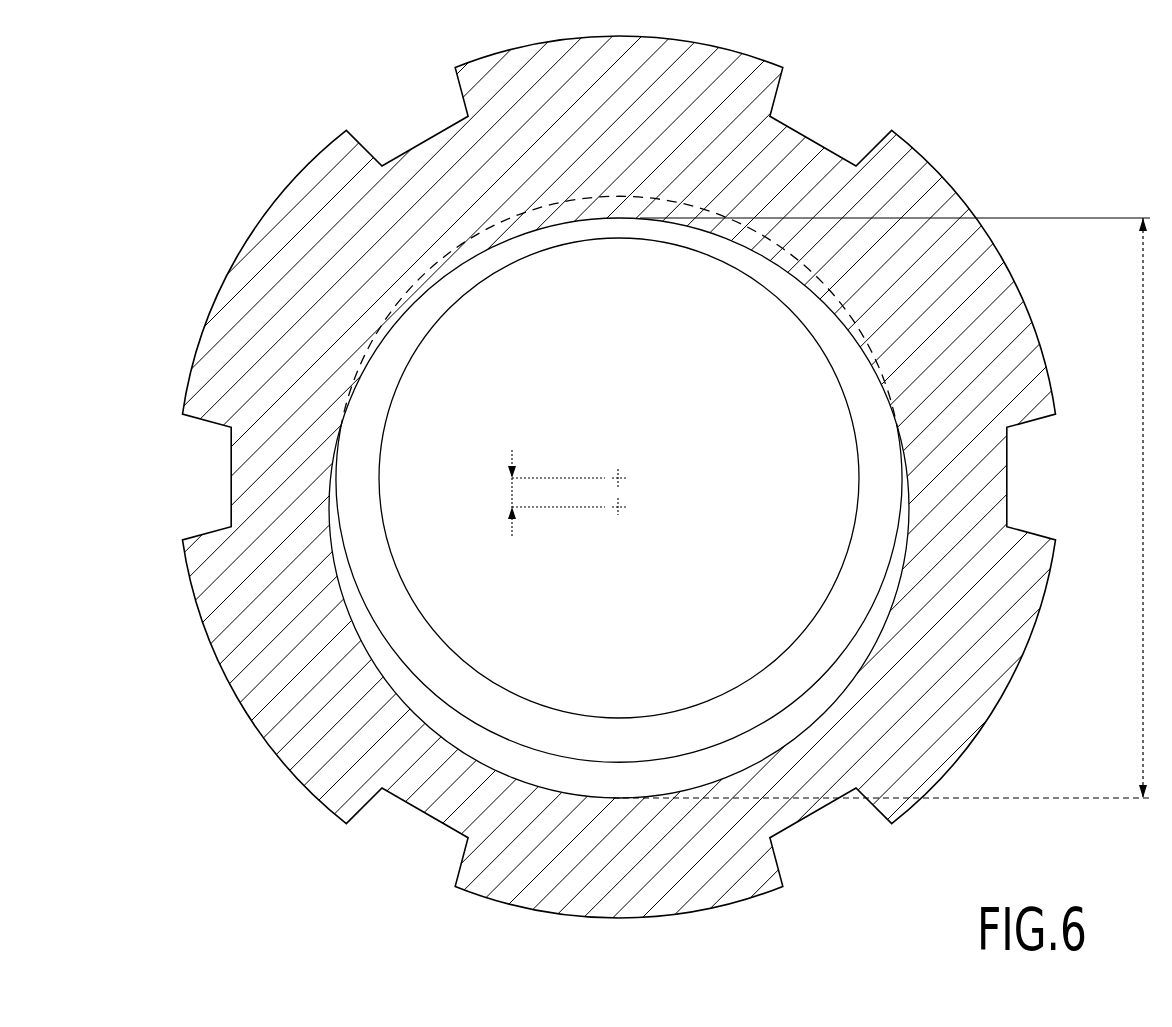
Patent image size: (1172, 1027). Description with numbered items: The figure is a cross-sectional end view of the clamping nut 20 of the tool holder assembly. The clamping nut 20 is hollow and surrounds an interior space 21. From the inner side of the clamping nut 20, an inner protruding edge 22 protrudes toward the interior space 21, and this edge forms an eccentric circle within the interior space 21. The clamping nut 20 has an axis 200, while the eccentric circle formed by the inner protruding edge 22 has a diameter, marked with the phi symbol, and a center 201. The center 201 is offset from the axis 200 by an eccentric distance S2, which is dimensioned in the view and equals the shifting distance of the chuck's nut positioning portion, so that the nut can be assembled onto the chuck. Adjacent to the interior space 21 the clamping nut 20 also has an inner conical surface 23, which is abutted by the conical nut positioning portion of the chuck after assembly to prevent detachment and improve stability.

The clamping nut 20 is at (198, 317).
The interior space 21 is at (625, 662).
The inner protruding edge 22 is at (555, 220).
The inner conical surface 23 is at (867, 547).
The axis 200 is at (618, 478).
The center 201 is at (618, 507).
The eccentric distance S2 is at (492, 493).